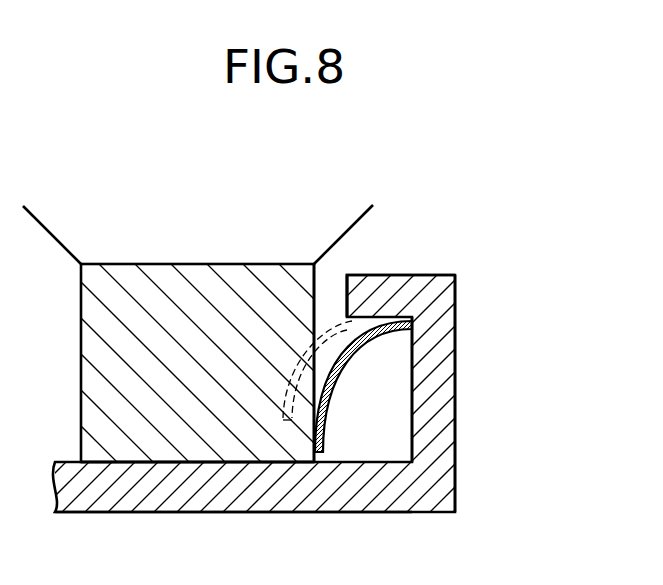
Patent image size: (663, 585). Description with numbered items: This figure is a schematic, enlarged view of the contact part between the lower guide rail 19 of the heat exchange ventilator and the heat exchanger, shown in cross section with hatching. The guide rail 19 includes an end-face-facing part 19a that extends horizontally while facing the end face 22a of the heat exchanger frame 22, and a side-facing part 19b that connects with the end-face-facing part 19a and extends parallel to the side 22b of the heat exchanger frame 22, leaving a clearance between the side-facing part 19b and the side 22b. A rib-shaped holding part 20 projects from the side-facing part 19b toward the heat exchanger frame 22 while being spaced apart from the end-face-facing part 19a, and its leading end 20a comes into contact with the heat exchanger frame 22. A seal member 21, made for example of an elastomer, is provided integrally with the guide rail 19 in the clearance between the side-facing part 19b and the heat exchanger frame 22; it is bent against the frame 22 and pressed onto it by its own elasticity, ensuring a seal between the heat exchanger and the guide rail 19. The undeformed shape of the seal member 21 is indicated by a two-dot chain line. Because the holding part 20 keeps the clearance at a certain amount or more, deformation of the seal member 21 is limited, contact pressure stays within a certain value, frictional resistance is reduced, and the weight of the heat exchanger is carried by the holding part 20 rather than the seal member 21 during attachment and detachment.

The guide rail 19 is at (420, 490).
The end-face-facing part 19a is at (343, 490).
The side-facing part 19b is at (437, 345).
The holding part 20 is at (377, 288).
The leading end 20a is at (347, 295).
The seal member 21 is at (313, 419).
The heat exchanger frame 22 is at (127, 447).
The end face 22a is at (202, 462).
The side 22b is at (313, 309).